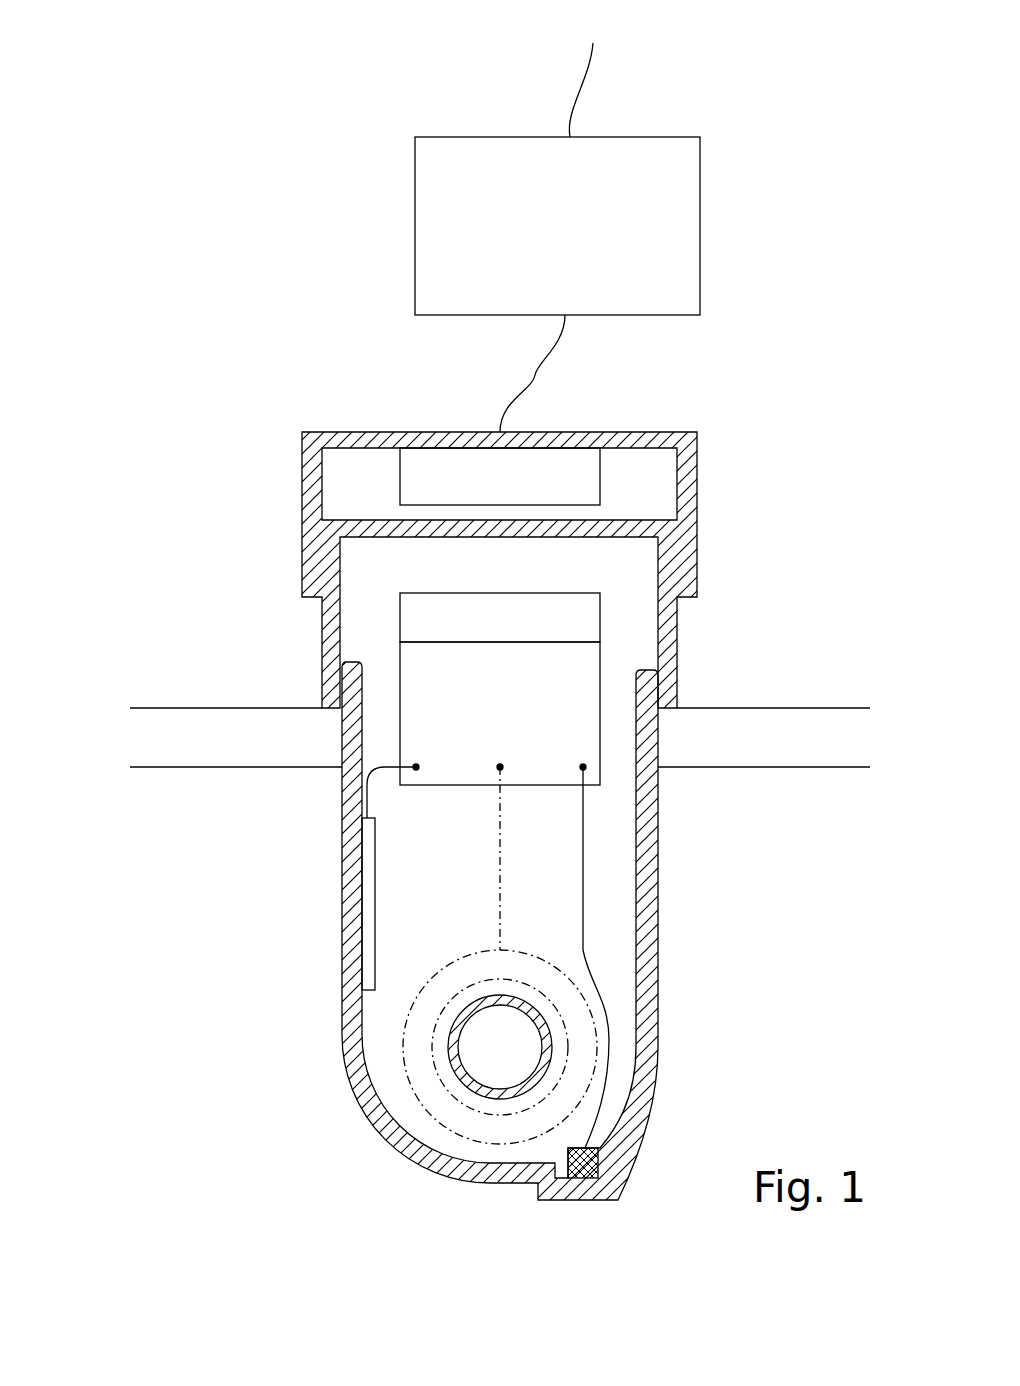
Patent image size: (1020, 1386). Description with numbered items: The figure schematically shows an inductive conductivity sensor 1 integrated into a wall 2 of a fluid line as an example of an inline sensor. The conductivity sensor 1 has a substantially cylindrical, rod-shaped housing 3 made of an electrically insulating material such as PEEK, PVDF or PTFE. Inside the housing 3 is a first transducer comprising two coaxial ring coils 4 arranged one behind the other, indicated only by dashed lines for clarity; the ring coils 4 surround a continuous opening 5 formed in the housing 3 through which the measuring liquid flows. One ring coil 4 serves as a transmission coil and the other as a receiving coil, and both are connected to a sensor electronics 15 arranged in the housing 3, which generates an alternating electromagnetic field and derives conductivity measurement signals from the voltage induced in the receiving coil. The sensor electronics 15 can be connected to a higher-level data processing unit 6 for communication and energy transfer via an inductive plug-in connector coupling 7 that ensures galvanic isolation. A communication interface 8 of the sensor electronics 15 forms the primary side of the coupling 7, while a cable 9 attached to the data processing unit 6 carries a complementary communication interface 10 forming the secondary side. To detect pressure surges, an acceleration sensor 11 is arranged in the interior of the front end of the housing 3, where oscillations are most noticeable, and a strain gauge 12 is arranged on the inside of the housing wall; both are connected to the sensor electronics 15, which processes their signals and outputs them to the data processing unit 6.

The inductive conductivity sensor 1 is at (788, 400).
The wall 2 is at (779, 730).
The housing 3 is at (645, 838).
The ring coils 4 is at (432, 1085).
The continuous opening 5 is at (505, 1072).
The higher-level data processing unit 6 is at (549, 233).
The inductive plug-in connector coupling 7 is at (275, 508).
The communication interface 8 is at (491, 631).
The cable 9 is at (535, 375).
The communication interface 10 is at (485, 492).
The acceleration sensor 11 is at (583, 1178).
The strain gauge 12 is at (368, 904).
The sensor electronics 15 is at (485, 709).